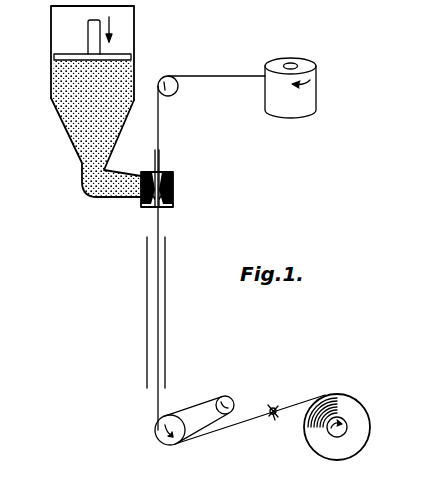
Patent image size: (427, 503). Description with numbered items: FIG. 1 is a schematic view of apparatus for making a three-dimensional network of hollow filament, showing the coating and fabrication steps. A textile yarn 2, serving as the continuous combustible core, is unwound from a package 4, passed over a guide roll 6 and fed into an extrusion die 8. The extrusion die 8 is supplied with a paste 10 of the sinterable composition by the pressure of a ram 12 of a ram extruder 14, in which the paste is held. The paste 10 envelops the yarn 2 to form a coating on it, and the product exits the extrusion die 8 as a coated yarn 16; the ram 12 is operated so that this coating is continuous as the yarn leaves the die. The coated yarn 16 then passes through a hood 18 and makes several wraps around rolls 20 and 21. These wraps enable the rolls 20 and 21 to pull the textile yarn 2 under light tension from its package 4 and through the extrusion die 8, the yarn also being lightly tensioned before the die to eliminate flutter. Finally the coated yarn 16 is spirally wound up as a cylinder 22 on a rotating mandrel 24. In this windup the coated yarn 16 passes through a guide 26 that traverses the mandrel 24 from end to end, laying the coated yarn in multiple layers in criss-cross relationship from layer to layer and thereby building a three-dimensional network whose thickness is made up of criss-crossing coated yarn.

The textile yarn 2 is at (232, 76).
The package 4 is at (305, 94).
The guide roll 6 is at (176, 95).
The extrusion die 8 is at (177, 190).
The paste 10 is at (82, 146).
The ram 12 is at (88, 33).
The ram extruder 14 is at (50, 113).
The coated yarn 16 is at (160, 224).
The hood 18 is at (166, 310).
The roll 20 is at (155, 430).
The roll 21 is at (234, 399).
The cylinder 22 is at (370, 432).
The rotating mandrel 24 is at (337, 434).
The guide 26 is at (279, 420).